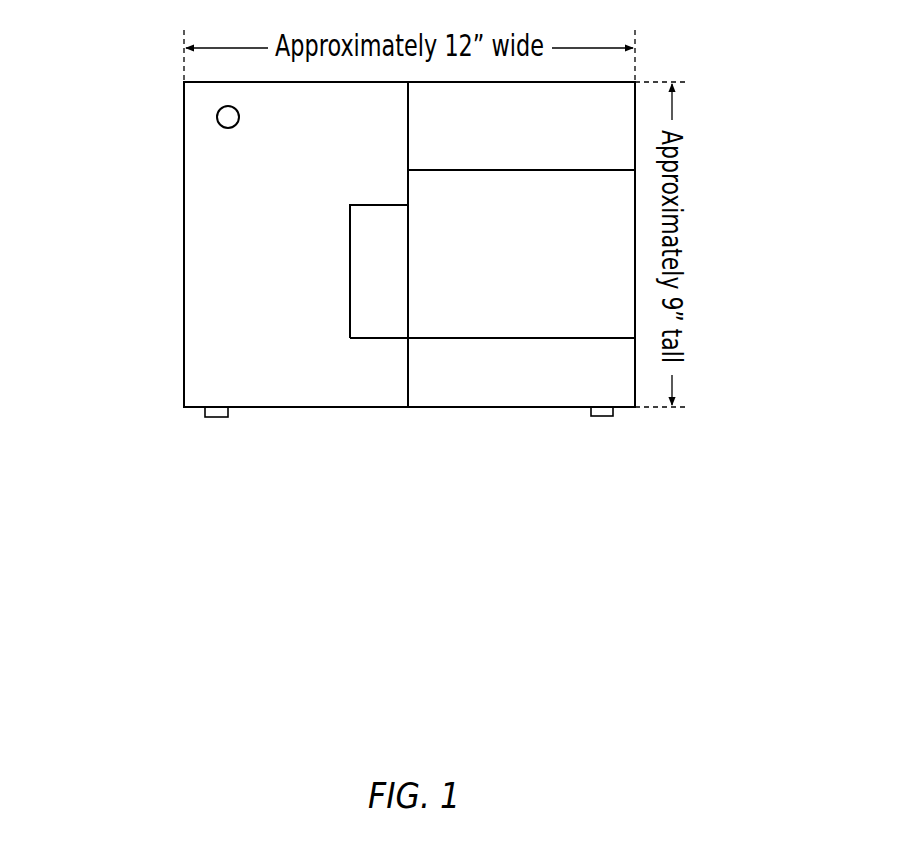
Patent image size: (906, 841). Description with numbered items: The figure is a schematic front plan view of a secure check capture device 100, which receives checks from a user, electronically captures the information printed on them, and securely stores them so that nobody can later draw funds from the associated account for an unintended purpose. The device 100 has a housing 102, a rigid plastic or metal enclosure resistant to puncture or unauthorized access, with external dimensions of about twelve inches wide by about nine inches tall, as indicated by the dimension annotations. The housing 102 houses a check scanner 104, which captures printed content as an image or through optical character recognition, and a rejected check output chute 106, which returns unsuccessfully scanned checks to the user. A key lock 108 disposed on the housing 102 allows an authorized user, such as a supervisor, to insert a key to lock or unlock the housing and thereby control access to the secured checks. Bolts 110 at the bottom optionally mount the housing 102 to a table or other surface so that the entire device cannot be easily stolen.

The secure check capture device 100 is at (362, 344).
The housing 102 is at (257, 252).
The check scanner 104 is at (537, 291).
The rejected check output chute 106 is at (377, 304).
The key lock 108 is at (204, 125).
The bolts 110 is at (597, 420).